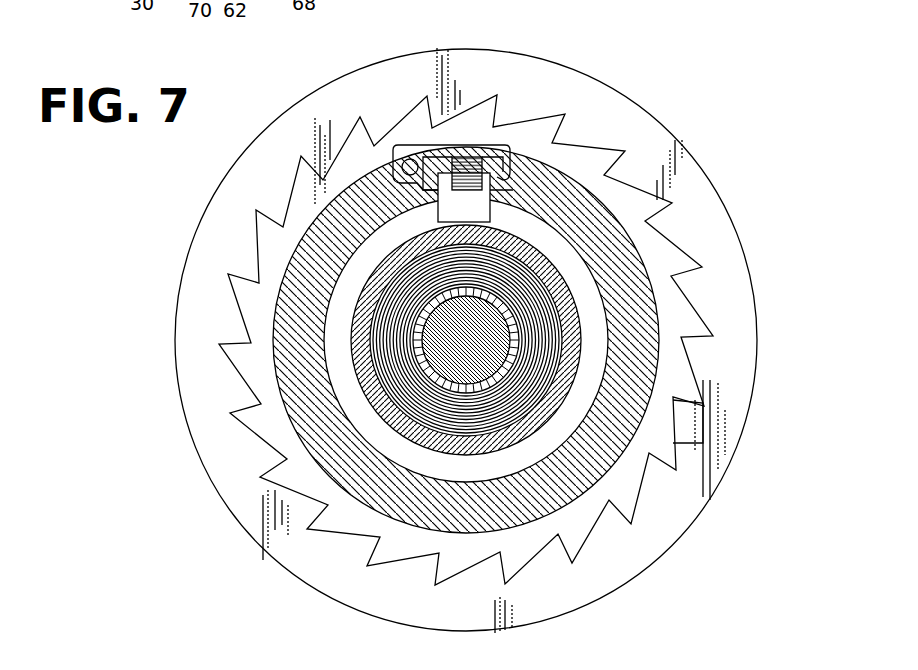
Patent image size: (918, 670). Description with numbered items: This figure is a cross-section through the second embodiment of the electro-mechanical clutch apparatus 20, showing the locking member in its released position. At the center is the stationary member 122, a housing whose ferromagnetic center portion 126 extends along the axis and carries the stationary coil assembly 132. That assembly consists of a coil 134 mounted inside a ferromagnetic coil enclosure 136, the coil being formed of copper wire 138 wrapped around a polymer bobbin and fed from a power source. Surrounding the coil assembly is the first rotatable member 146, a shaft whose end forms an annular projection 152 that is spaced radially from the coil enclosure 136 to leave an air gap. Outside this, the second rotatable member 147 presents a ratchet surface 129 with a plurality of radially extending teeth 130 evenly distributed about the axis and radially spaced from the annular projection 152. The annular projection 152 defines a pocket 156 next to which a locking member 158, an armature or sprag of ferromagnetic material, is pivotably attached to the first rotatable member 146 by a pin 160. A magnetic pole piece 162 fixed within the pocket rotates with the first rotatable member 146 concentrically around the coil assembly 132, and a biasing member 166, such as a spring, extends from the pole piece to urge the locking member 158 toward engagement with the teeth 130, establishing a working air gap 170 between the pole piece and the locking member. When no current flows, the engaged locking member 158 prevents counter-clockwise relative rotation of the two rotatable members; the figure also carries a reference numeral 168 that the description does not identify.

The cable gland assembly 20 is at (758, 165).
The stationary member 122 is at (420, 390).
The center portion 126 is at (397, 410).
The ratchet surface 129 is at (622, 480).
The teeth 130 is at (673, 430).
The stationary coil assembly 132 is at (430, 370).
The coil 134 is at (346, 377).
The coil enclosure 136 is at (370, 282).
The copper wire 138 is at (348, 350).
The first rotatable member 146 is at (625, 290).
The second rotatable member 147 is at (715, 500).
The annular projection 152 is at (605, 215).
The pocket 156 is at (512, 170).
The locking member 158 is at (458, 140).
The pin 160 is at (401, 163).
The magnetic pole piece 162 is at (468, 156).
The biasing member 166 is at (457, 156).
The clamp band 168 is at (500, 160).
The working air gap 170 is at (490, 156).